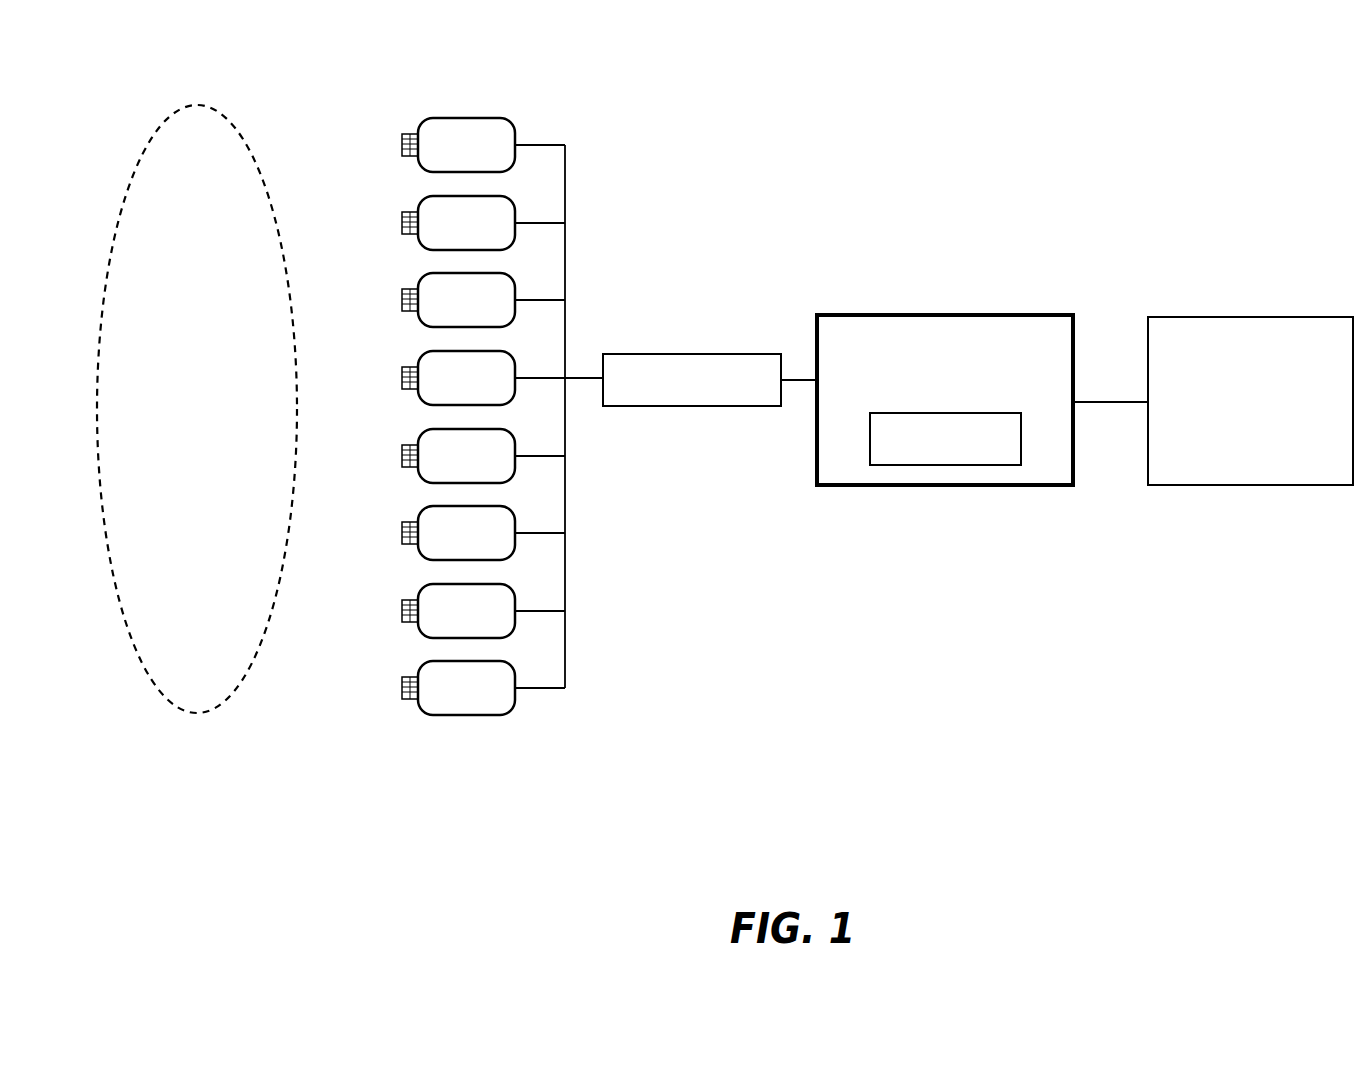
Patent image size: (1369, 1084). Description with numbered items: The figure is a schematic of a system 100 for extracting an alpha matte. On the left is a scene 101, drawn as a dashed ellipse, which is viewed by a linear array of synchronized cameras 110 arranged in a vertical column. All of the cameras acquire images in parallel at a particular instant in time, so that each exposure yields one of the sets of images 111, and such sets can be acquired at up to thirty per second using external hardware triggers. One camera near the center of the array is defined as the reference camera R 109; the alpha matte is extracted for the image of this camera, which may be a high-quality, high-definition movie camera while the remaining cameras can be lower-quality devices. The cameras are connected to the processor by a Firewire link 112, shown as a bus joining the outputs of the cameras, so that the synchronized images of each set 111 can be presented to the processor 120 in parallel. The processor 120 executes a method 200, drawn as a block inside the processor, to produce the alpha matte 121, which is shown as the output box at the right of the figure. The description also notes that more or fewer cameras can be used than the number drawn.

The system 100 is at (829, 893).
The scene 101 is at (210, 108).
The reference camera R 109 is at (398, 378).
The synchronized cameras 110 is at (452, 118).
The sets of images 111 is at (655, 354).
The Firewire link 112 is at (566, 300).
The processor 120 is at (920, 315).
The alpha matte 121 is at (1185, 317).
The method 200 is at (970, 465).